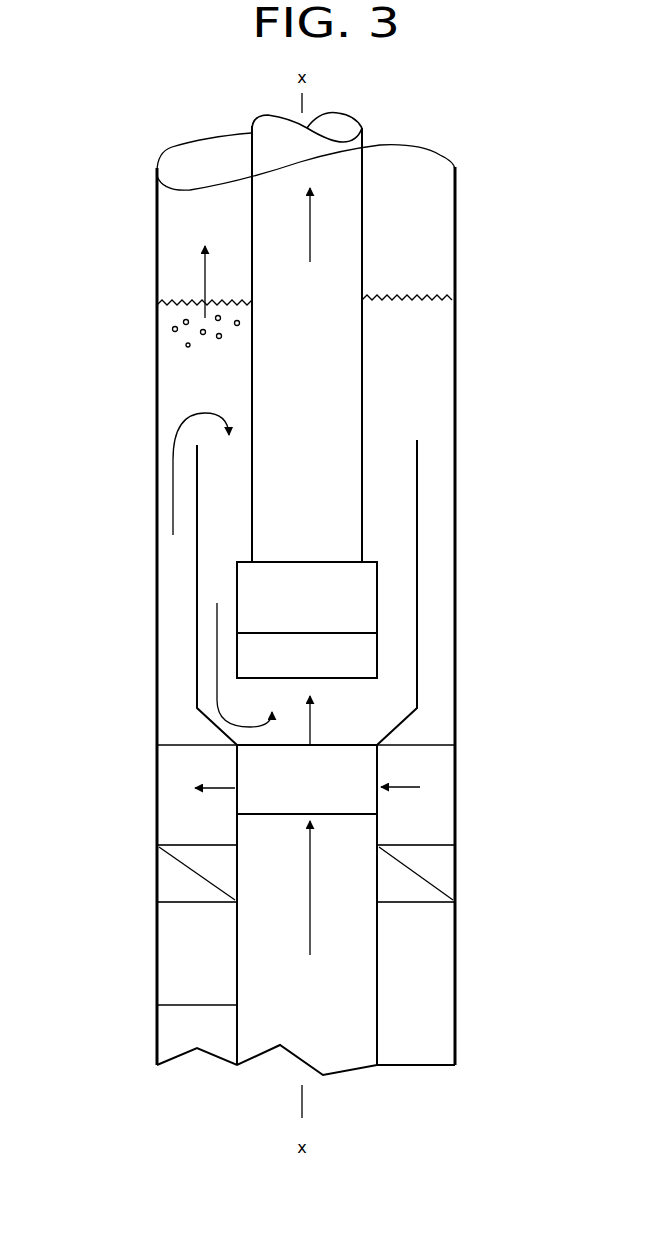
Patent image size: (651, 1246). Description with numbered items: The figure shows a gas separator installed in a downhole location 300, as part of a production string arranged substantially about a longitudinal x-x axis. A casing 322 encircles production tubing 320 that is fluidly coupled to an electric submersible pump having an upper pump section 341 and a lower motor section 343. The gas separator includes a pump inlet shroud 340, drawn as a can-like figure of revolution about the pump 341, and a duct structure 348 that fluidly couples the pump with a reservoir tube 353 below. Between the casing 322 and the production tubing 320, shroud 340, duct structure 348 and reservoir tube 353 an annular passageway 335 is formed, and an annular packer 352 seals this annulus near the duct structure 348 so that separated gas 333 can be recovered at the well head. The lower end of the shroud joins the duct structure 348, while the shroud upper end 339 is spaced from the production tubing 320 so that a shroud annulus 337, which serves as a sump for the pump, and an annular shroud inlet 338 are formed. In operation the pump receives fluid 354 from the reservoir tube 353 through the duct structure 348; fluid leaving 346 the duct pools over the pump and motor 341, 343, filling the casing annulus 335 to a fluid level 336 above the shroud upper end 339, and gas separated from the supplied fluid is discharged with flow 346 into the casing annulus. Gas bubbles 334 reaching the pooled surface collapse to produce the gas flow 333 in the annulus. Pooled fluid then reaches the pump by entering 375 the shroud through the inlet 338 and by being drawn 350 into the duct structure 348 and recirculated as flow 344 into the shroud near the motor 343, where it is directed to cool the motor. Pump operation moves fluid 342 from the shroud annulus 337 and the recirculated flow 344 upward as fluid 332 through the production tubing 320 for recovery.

The downhole location 300 is at (392, 75).
The production tubing 320 is at (363, 128).
The casing 322 is at (457, 180).
The fluid moved through production tubing 332 is at (308, 222).
The separated gas flow 333 is at (200, 290).
The gas bubbles 334 is at (187, 355).
The annular passageway 335 is at (412, 222).
The fluid level 336 is at (420, 298).
The shroud annulus 337 is at (221, 515).
The annular shroud inlet 338 is at (390, 420).
The shroud upper end 339 is at (417, 440).
The pump inlet shroud 340 is at (418, 503).
The upper pump section 341 is at (365, 595).
The fluid moved from shroud annulus 342 is at (216, 660).
The lower motor section 343 is at (365, 657).
The fluid leaving recirculation duct 344 is at (313, 718).
The fluid leaving supply duct 346 is at (217, 790).
The duct structure 348 is at (377, 758).
The fluid entering recirculation duct 350 is at (405, 790).
The annular packer 352 is at (445, 870).
The reservoir tube 353 is at (157, 1005).
The fluid from reservoir tube 354 is at (305, 910).
The fluid entering shroud inlet 375 is at (184, 425).